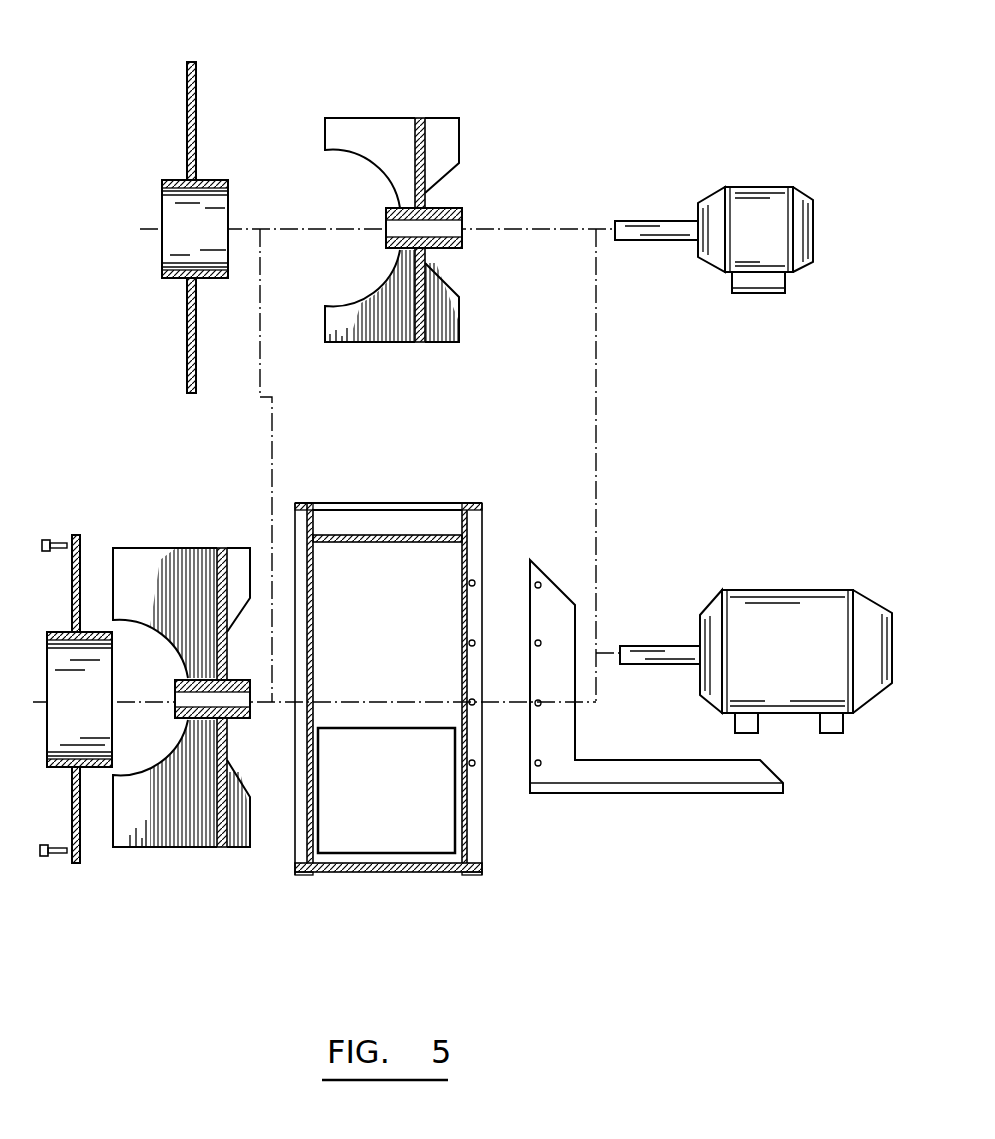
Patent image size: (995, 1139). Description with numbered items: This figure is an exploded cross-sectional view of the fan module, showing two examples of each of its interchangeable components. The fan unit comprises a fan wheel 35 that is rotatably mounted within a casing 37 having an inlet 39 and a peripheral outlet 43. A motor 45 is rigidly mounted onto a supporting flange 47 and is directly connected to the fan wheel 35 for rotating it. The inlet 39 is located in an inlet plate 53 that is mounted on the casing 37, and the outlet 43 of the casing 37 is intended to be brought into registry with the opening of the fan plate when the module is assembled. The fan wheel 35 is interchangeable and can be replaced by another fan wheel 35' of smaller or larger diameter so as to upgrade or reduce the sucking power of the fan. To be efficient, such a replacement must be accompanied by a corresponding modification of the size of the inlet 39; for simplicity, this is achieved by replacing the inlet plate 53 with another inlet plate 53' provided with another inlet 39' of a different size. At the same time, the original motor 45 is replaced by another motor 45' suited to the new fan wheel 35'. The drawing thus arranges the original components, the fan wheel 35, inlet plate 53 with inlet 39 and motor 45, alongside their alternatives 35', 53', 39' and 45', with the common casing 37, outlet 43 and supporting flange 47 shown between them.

The fan wheel 35' is at (393, 179).
The inlet 39' is at (161, 229).
The inlet plate 53' is at (158, 227).
The motor 45' is at (714, 196).
The casing 37 is at (367, 535).
The peripheral outlet 43 is at (389, 820).
The motor 45 is at (756, 623).
The supporting flange 47 is at (668, 793).
The inlet 39 is at (99, 699).
The inlet plate 53 is at (53, 699).
The fan wheel 35 is at (181, 729).